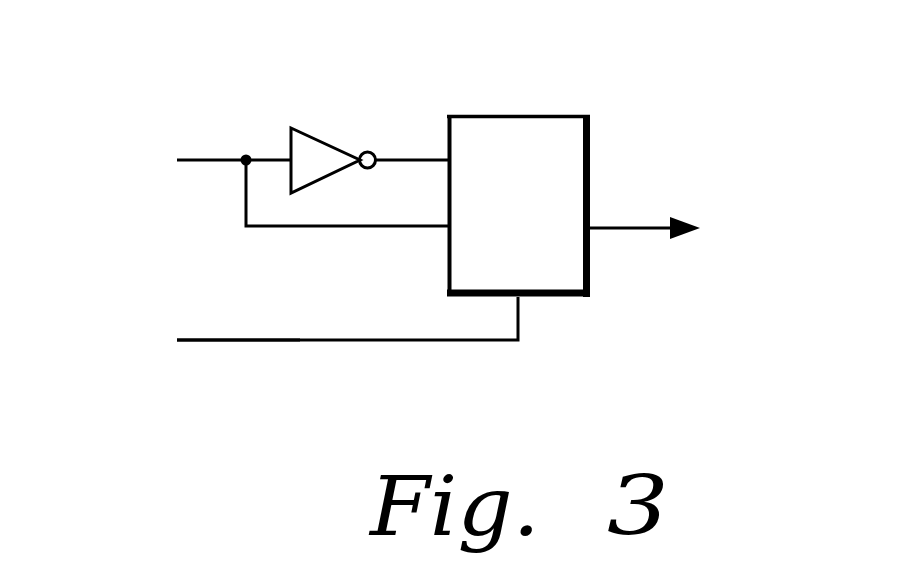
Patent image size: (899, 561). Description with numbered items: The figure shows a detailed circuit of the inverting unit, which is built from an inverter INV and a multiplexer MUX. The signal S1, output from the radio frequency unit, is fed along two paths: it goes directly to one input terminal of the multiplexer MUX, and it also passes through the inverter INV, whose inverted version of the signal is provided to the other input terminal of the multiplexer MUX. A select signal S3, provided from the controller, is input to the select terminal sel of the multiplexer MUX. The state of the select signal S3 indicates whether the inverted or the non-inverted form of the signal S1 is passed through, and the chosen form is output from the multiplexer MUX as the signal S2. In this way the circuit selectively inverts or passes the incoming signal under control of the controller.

The signal S1 is at (237, 177).
The output signal S2 is at (719, 227).
The select signal S3 is at (162, 337).
The inverter INV is at (326, 152).
The multiplexer MUX is at (517, 116).
The select terminal sel is at (361, 299).